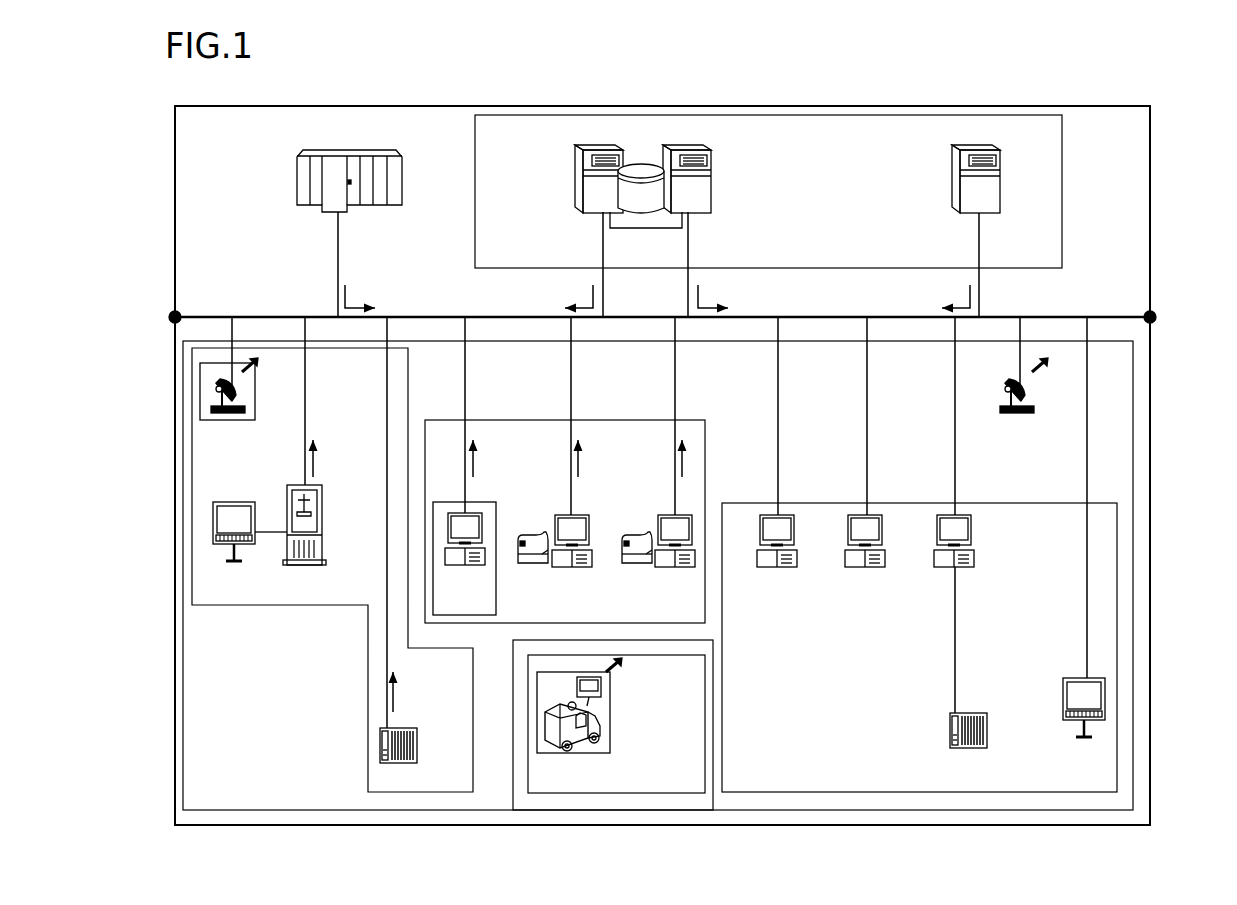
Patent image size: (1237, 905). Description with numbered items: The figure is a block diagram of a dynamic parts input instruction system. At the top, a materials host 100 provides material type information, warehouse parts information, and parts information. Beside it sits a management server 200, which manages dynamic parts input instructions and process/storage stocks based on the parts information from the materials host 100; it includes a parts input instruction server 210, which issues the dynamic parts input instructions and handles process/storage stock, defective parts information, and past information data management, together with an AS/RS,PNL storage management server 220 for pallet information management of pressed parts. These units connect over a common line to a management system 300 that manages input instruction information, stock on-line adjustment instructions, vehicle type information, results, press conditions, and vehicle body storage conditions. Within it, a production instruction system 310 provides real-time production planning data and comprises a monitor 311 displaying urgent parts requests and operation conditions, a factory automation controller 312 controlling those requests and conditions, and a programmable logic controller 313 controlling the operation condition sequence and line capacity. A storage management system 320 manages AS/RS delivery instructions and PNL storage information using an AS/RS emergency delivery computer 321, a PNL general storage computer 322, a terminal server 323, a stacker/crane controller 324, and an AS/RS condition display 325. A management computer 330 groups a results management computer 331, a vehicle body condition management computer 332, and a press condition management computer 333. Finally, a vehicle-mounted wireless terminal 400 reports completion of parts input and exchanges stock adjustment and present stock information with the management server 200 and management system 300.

The materials host 100 is at (274, 188).
The management server 200 is at (1076, 190).
The parts input instruction server 210 is at (713, 190).
The AS/RS,PNL storage management server 220 is at (952, 189).
The management system 300 is at (1138, 470).
The production instruction system 310 is at (280, 610).
The monitor 311 is at (238, 501).
The factory automation controller 312 is at (323, 516).
The programmable logic controller 313 is at (379, 746).
The storage management system 320 is at (1122, 573).
The AS/RS emergency delivery computer 321 is at (790, 513).
The PNL general storage computer 322 is at (879, 513).
The terminal server 323 is at (967, 513).
The stacker/crane controller 324 is at (970, 710).
The AS/RS condition display 325 is at (1073, 676).
The management computer 330 is at (520, 415).
The results management computer 331 is at (453, 502).
The vehicle body condition management computer 332 is at (537, 532).
The press condition management computer 333 is at (640, 532).
The vehicle-mounted wireless terminal 400 is at (628, 800).